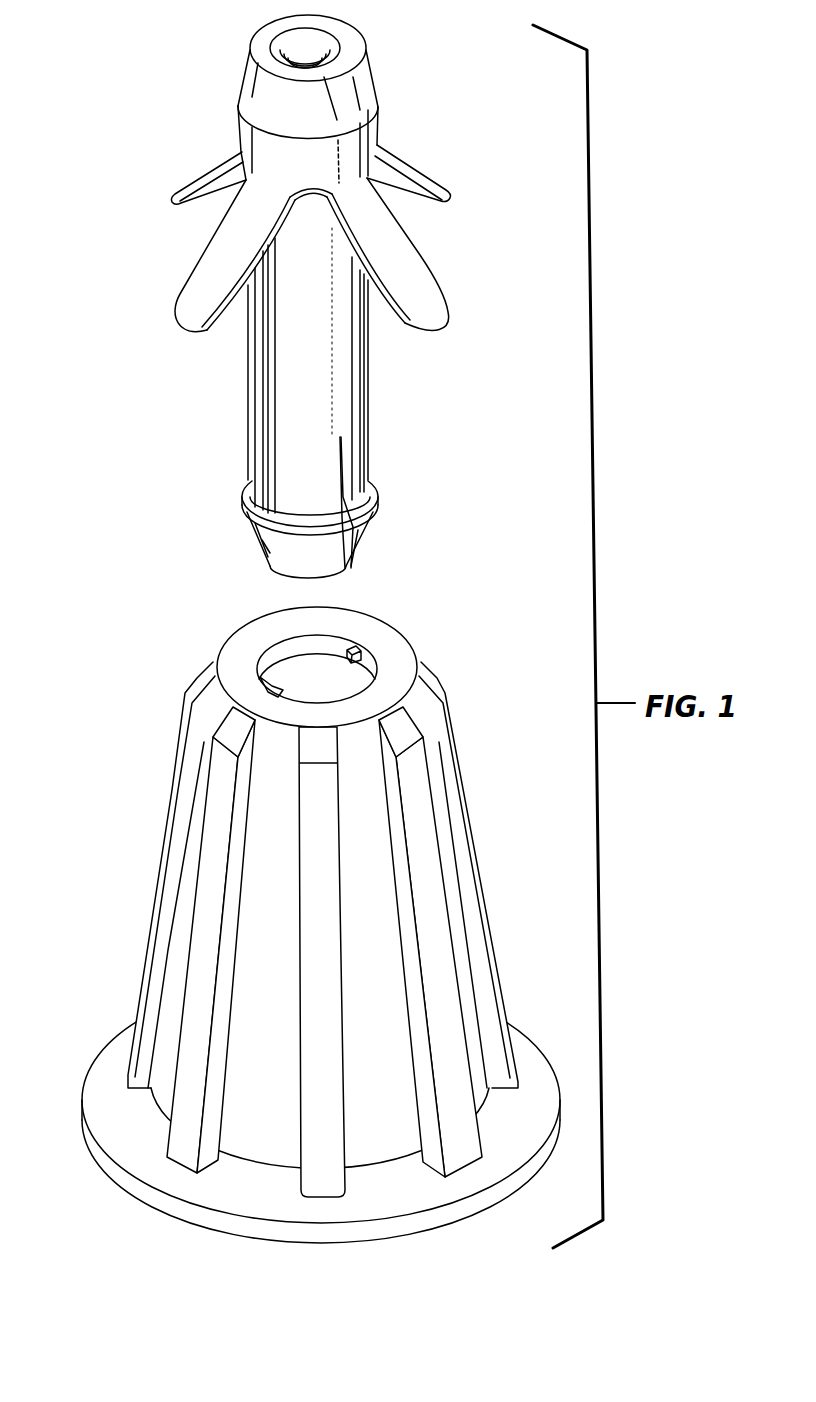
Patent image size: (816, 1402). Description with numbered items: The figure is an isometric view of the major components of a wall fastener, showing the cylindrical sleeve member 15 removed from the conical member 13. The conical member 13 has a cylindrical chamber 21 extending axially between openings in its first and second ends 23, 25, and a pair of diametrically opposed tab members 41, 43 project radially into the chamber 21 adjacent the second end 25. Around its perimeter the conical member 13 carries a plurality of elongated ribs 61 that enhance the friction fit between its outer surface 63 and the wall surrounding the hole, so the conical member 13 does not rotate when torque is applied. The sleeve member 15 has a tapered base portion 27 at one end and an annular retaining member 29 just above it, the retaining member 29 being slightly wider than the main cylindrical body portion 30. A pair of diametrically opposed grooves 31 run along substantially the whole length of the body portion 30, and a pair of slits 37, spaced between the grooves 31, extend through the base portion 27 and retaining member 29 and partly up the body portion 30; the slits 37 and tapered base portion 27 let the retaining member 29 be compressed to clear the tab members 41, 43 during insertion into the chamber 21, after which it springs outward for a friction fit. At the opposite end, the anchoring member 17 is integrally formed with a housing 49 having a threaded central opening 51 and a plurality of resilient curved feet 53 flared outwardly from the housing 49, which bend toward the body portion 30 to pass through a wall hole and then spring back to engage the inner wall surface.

The conical member 13 is at (308, 916).
The cylindrical sleeve member 15 is at (311, 296).
The anchoring member 17 is at (338, 109).
The cylindrical chamber 21 is at (318, 660).
The first end 23 is at (155, 1115).
The second end 25 is at (304, 652).
The tapered base portion 27 is at (266, 554).
The annular retaining member 29 is at (248, 503).
The main cylindrical body portion 30 is at (301, 370).
The grooves 31 is at (272, 386).
The slits 37 is at (346, 567).
The tab member 41 is at (356, 652).
The tab member 43 is at (262, 681).
The housing 49 is at (357, 93).
The threaded central opening 51 is at (318, 54).
The curved feet 53 is at (193, 295).
The elongated ribs 61 is at (315, 1093).
The outer surface 63 is at (392, 1145).